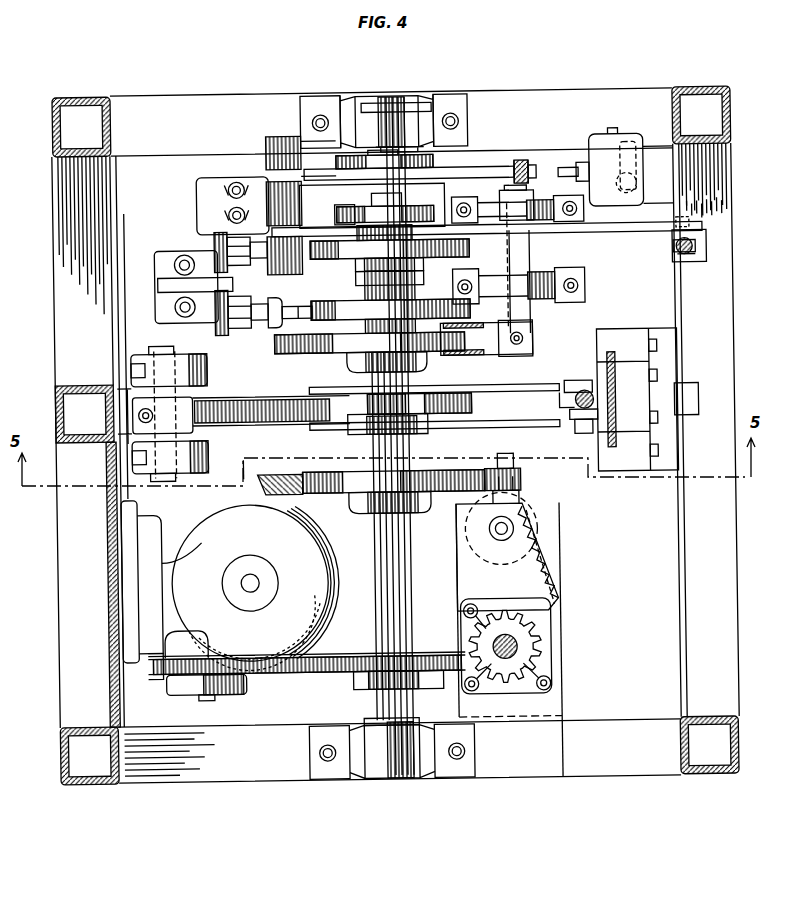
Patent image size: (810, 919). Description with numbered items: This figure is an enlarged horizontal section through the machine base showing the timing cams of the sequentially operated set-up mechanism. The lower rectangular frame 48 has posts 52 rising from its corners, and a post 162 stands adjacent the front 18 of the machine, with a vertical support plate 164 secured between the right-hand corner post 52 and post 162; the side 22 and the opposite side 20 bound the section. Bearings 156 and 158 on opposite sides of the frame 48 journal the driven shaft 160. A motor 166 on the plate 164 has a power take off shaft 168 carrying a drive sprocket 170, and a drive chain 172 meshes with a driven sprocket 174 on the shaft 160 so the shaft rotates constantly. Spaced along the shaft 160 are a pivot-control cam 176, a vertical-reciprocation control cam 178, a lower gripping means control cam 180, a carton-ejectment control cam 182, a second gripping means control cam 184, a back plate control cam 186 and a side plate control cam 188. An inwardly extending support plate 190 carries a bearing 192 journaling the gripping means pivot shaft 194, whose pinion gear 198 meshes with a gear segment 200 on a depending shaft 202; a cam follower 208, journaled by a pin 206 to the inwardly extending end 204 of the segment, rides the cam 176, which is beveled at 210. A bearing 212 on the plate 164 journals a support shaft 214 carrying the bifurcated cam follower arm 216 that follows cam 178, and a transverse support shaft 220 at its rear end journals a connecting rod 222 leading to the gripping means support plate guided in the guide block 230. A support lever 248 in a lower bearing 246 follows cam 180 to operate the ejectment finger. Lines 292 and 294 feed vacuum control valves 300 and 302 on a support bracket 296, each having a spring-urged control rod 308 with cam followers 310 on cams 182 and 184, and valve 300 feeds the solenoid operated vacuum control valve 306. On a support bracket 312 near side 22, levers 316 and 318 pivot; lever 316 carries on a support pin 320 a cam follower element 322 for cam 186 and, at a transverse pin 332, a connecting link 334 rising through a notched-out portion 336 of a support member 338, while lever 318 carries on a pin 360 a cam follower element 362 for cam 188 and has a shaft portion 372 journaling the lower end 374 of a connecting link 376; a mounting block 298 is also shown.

The front 18 is at (54, 341).
The right side frame member 20 is at (736, 335).
The side 22 is at (600, 90).
The lower rectangular frame 48 is at (60, 565).
The posts 52 is at (78, 97).
The bearing 156 is at (378, 756).
The bearing 158 is at (362, 98).
The driven shaft 160 is at (388, 96).
The post 162 is at (56, 394).
The vertical support plate 164 is at (106, 699).
The motor 166 is at (230, 585).
The power take off shaft 168 is at (212, 692).
The drive sprocket 170 is at (150, 675).
The drive chain 172 is at (312, 674).
The driven sprocket 174 is at (422, 662).
The pivot-control cam 176 is at (345, 476).
The vertical-reciprocation control cam 178 is at (330, 416).
The lower gripping means control cam 180 is at (330, 348).
The carton-ejectment control cam 182 is at (445, 303).
The second gripping means control cam 184 is at (458, 258).
The back plate control cam 186 is at (340, 220).
The side plate control cam 188 is at (440, 162).
The support plate 190 is at (542, 702).
The bearing 192 is at (550, 628).
The gripping means pivot shaft 194 is at (545, 648).
The pinion gear 198 is at (518, 666).
The gear segment 200 is at (545, 560).
The depending shaft 202 is at (512, 530).
The inwardly extending end 204 is at (522, 500).
The pin 206 is at (504, 460).
The cam follower 208 is at (520, 478).
The peripheral bevel 210 is at (255, 480).
The bearing 212 is at (192, 362).
The support shaft 214 is at (205, 400).
The cam follower arm 216 is at (255, 400).
The transverse support shaft 220 is at (586, 385).
The connecting rod 222 is at (580, 416).
The guide block 230 is at (630, 332).
The lower bearing 246 is at (532, 278).
The support lever 248 is at (485, 332).
The connection line 292 is at (176, 304).
The connection line 294 is at (176, 263).
The support bracket 296 is at (162, 283).
The mounting block 298 is at (176, 248).
The vacuum control valve 300 is at (246, 328).
The vacuum control valve 302 is at (240, 238).
The solenoid operated vacuum control valve 306 is at (615, 146).
The control rod 308 is at (280, 302).
The cam followers 310 is at (314, 310).
The support bracket 312 is at (203, 183).
The lever 316 is at (628, 233).
The lever 318 is at (502, 170).
The support pin 320 is at (388, 200).
The cam follower element 322 is at (378, 214).
The transverse pin 332 is at (700, 262).
The connecting link 334 is at (700, 250).
The notched-out portion 336 is at (706, 238).
The support member 338 is at (720, 196).
The pin 360 is at (406, 140).
The cam follower element 362 is at (432, 126).
The shaft portion 372 is at (570, 168).
The lower end 374 is at (530, 164).
The connecting link 376 is at (538, 168).